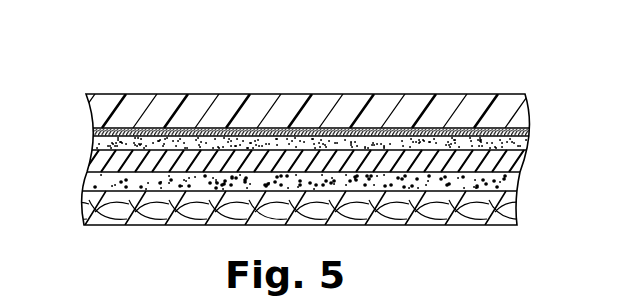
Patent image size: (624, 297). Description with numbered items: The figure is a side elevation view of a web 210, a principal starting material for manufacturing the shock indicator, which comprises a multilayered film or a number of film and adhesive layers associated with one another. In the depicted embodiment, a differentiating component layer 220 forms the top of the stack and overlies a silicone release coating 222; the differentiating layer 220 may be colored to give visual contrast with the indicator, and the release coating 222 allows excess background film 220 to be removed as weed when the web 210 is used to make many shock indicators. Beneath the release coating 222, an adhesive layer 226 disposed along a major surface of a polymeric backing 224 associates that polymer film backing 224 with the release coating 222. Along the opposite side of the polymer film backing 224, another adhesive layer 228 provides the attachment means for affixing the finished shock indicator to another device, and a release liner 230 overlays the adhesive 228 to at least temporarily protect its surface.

The web 210 is at (194, 58).
The differentiating component layer 220 is at (530, 111).
The silicone release coating 222 is at (531, 128).
The polymeric backing 224 is at (520, 160).
The adhesive layer 226 is at (94, 146).
The adhesive layer 228 is at (90, 182).
The release liner 230 is at (517, 208).